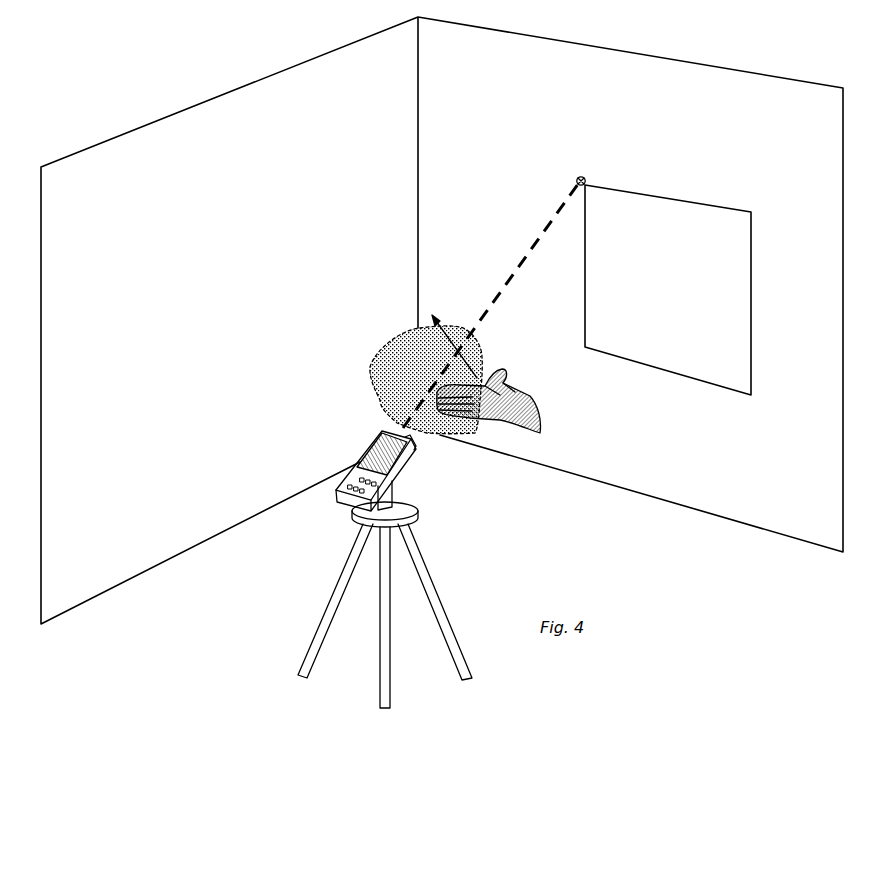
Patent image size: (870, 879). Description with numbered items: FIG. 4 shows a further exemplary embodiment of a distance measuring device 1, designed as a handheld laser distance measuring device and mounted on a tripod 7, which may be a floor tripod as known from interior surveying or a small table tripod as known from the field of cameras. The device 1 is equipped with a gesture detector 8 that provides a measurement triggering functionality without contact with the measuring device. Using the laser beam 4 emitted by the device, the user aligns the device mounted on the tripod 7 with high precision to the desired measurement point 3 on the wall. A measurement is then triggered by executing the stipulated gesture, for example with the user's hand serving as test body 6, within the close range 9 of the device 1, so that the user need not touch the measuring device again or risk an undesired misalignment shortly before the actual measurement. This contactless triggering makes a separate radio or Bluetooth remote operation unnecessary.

The distance measuring device 1 is at (390, 449).
The measurement point 3 is at (586, 179).
The laser beam 4 is at (502, 295).
The test body 6 is at (505, 381).
The tripod 7 is at (432, 526).
The gesture detector 8 is at (417, 459).
The close range 9 is at (400, 343).